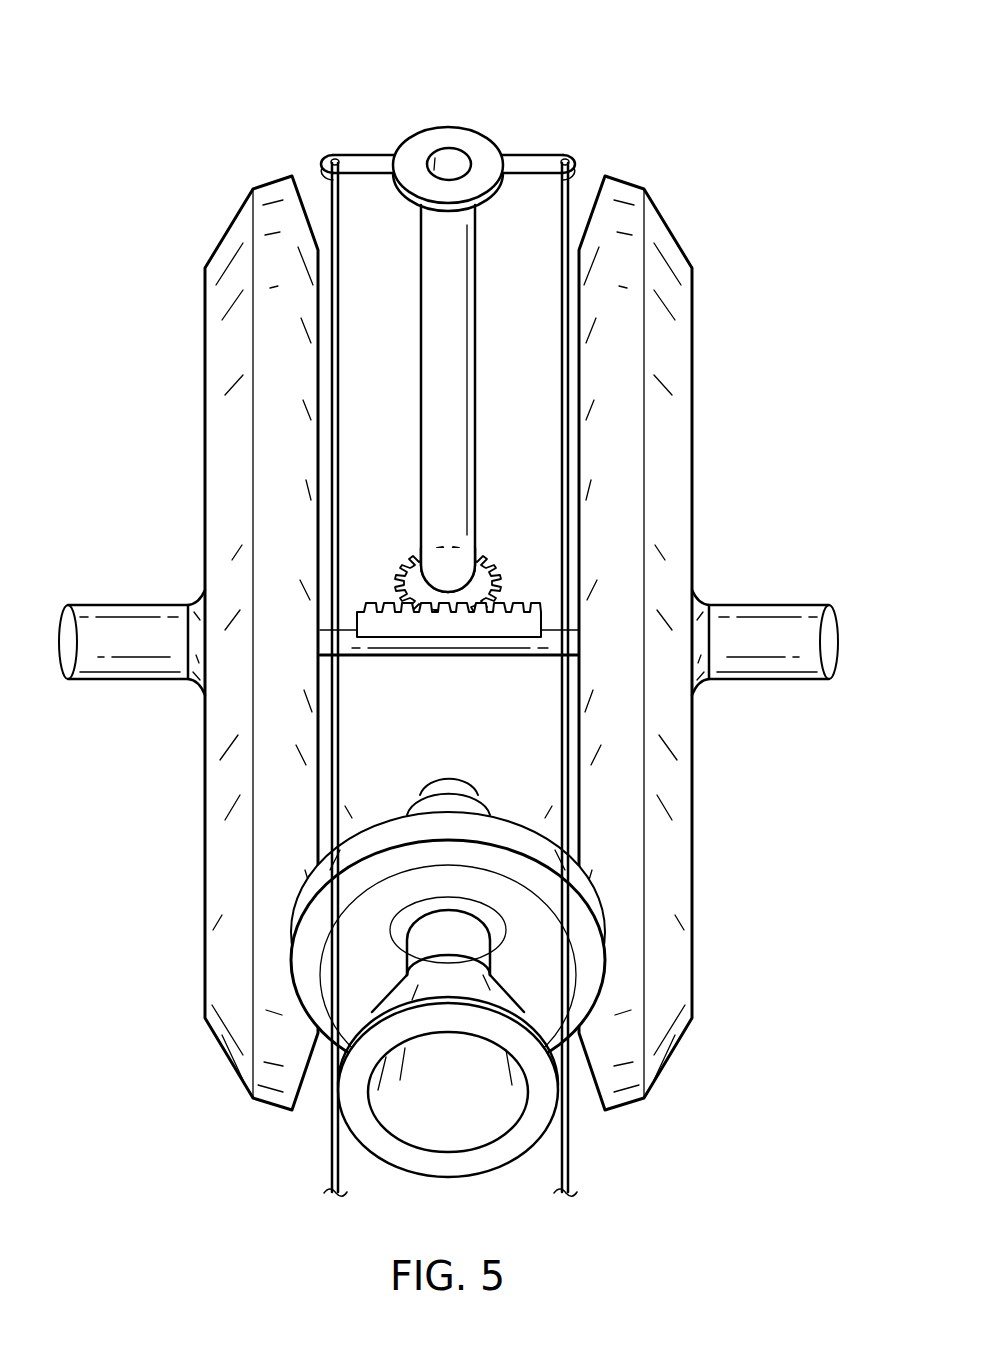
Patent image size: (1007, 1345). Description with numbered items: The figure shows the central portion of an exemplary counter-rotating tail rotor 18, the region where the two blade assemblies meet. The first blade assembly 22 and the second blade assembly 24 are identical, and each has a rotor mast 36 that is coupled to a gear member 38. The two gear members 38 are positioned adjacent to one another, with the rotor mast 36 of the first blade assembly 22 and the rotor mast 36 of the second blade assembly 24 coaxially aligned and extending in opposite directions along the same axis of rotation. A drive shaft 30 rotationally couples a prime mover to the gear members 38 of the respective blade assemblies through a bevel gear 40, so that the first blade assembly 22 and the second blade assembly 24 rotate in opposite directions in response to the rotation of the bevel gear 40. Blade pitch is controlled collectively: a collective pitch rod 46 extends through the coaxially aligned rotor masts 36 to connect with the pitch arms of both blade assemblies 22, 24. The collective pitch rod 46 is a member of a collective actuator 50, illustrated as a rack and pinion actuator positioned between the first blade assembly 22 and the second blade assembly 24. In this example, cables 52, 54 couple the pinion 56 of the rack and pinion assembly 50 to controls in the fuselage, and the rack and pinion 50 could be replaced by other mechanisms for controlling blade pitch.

The drive assembly 18 is at (643, 77).
The first blade assembly 22 is at (716, 378).
The second blade assembly 24 is at (181, 378).
The drive shaft 30 is at (428, 1163).
The rotor mast 36 is at (122, 605).
The gear member 38 is at (216, 944).
The bevel gear 40 is at (503, 828).
The collective pitch rod 46 is at (450, 655).
The collective actuator 50 is at (419, 112).
The cable 52 is at (560, 355).
The cable 54 is at (339, 354).
The pinion 56 is at (470, 138).